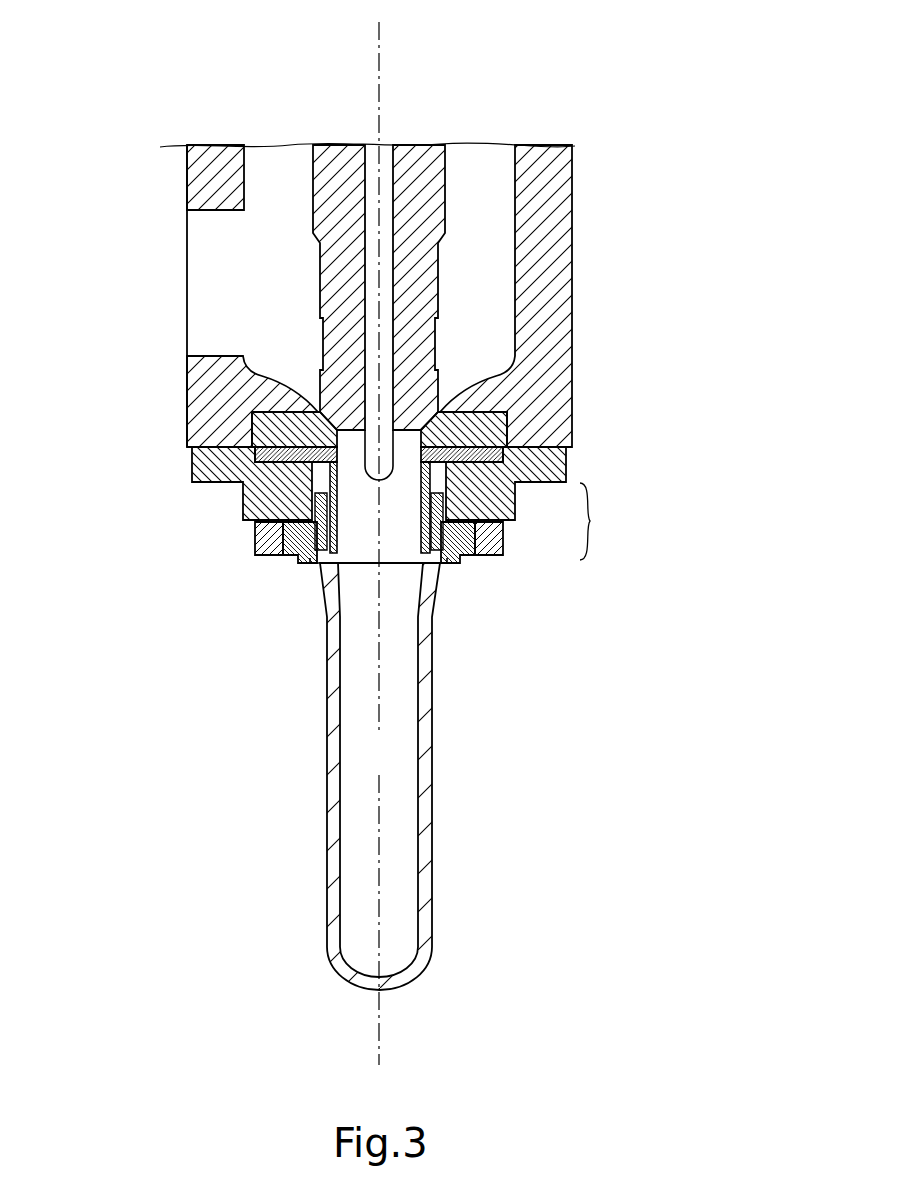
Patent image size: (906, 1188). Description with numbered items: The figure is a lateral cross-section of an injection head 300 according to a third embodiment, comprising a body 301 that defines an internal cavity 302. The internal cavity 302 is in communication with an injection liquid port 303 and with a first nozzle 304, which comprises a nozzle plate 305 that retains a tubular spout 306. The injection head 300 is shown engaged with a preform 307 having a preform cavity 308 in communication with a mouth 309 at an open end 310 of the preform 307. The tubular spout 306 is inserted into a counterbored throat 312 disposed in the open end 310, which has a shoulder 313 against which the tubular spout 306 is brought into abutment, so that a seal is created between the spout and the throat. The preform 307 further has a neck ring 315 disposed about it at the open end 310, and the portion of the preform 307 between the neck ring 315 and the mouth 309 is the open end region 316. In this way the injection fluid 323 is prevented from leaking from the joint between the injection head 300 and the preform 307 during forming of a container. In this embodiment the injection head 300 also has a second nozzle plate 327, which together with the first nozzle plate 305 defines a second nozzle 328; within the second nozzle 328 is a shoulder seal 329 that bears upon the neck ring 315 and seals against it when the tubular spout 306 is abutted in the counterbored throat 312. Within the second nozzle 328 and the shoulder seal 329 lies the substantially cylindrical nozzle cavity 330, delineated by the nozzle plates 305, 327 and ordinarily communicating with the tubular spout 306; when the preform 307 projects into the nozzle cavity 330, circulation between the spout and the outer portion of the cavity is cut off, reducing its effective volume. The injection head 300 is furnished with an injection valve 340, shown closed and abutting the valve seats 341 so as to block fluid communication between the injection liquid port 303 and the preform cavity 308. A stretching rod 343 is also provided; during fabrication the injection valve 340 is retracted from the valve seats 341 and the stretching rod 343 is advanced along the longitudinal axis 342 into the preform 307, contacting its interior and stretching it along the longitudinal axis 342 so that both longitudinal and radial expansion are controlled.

The injection head 300 is at (647, 133).
The body 301 is at (563, 193).
The internal cavity 302 is at (475, 153).
The injection liquid port 303 is at (195, 292).
The first nozzle 304 is at (137, 468).
The nozzle plate 305 is at (188, 457).
The tubular spout 306 is at (327, 473).
The preform 307 is at (430, 833).
The preform cavity 308 is at (402, 766).
The mouth 309 is at (323, 487).
The open end 310 is at (648, 553).
The counterbored throat 312 is at (335, 620).
The shoulder 313 is at (323, 585).
The neck ring 315 is at (443, 567).
The open end region 316 is at (613, 521).
The injection fluid 323 is at (280, 293).
The second nozzle plate 327 is at (253, 538).
The second nozzle 328 is at (303, 565).
The shoulder seal 329 is at (462, 560).
The nozzle cavity 330 is at (437, 470).
The injection valve 340 is at (418, 148).
The valve seats 341 is at (312, 403).
The longitudinal axis 342 is at (380, 40).
The stretching rod 343 is at (368, 148).